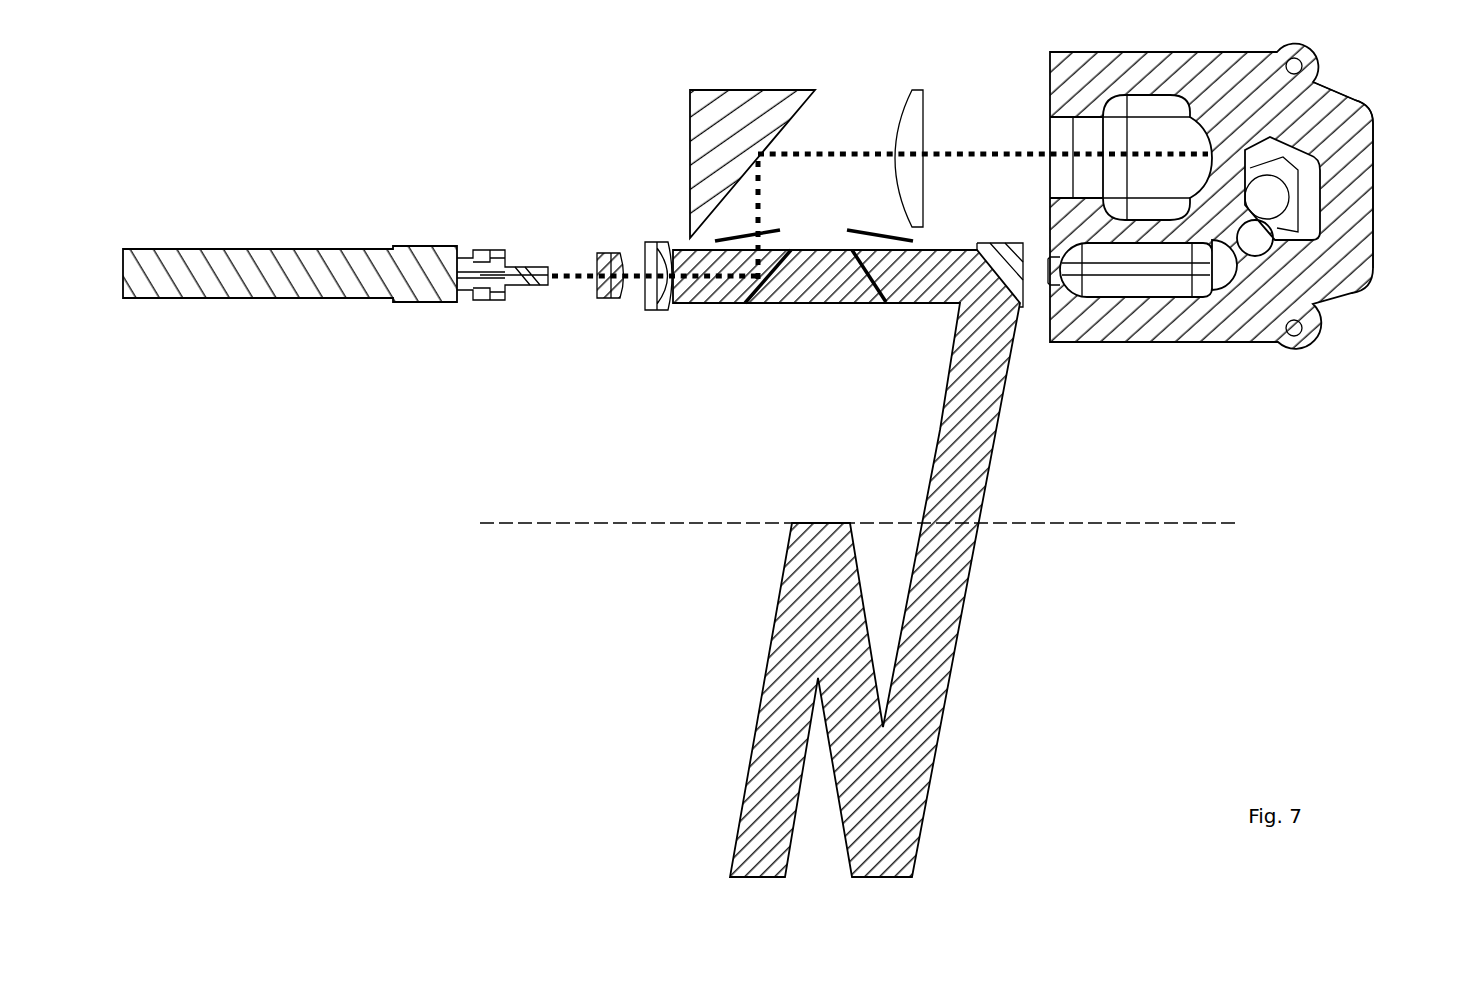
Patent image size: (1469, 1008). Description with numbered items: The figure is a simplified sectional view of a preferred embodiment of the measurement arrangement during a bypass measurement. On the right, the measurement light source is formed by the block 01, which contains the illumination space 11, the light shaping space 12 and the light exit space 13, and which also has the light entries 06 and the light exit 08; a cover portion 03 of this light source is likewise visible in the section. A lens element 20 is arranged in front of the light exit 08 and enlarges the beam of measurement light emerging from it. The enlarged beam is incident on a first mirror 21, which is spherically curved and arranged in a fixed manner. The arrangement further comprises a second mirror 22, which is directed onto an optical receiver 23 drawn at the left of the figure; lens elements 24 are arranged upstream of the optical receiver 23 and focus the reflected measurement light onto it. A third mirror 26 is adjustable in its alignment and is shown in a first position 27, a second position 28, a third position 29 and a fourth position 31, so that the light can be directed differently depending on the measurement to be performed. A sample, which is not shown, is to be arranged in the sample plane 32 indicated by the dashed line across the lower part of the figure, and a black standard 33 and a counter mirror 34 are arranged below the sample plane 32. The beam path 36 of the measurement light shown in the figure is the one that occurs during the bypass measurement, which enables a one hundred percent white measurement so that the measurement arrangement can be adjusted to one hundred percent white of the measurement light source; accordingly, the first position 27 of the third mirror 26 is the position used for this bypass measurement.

The block 01 is at (1350, 270).
The cover 03 is at (1348, 130).
The light entries 06 is at (1048, 273).
The light exit 08 is at (1057, 138).
The illumination space 11 is at (1115, 290).
The light shaping space 12 is at (1283, 197).
The light exit space 13 is at (1150, 152).
The lens element 20 is at (918, 118).
The first mirror 21 is at (757, 157).
The second mirror 22 is at (1000, 258).
The optical receiver 23 is at (383, 248).
The lens elements 24 is at (651, 248).
The third mirror 26 is at (876, 232).
The first position 27 is at (752, 300).
The second position 28 is at (880, 232).
The third position 29 is at (886, 303).
The fourth position 31 is at (752, 233).
The sample plane 32 is at (1130, 527).
The black standard 33 is at (752, 878).
The counter mirror 34 is at (880, 878).
The beam path 36 is at (835, 154).